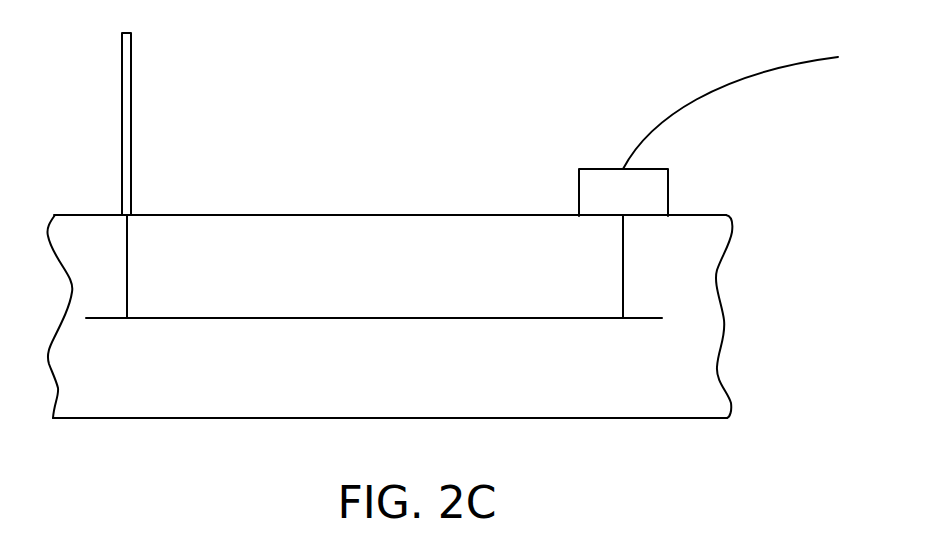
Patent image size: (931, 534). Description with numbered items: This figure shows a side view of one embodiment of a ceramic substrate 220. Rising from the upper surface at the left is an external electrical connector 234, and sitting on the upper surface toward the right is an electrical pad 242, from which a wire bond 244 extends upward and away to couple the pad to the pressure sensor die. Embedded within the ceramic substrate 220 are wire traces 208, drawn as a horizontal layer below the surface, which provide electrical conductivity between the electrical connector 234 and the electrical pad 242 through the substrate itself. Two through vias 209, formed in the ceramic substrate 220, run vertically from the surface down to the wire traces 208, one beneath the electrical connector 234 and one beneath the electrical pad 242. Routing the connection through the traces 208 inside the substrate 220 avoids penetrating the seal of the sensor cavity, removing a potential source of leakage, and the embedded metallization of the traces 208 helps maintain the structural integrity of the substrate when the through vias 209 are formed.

The ceramic substrate 220 is at (378, 402).
The wire traces 208 is at (180, 320).
The through vias 209 is at (128, 291).
The electrical connector 234 is at (90, 129).
The electrical pad 242 is at (604, 202).
The wire bond 244 is at (680, 107).